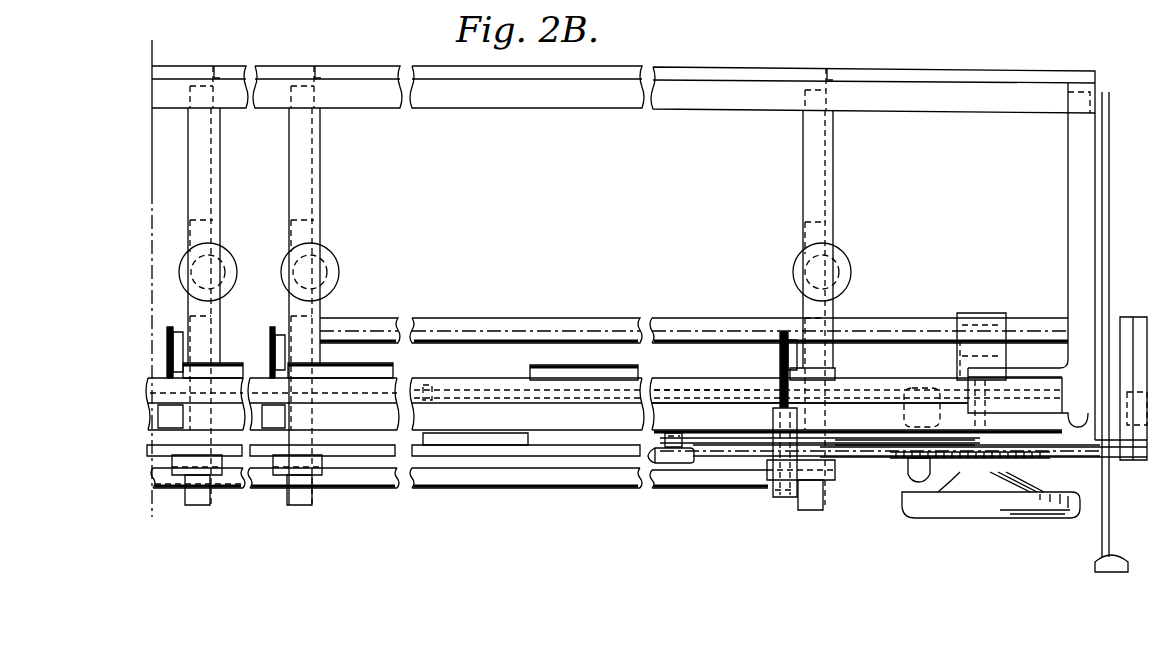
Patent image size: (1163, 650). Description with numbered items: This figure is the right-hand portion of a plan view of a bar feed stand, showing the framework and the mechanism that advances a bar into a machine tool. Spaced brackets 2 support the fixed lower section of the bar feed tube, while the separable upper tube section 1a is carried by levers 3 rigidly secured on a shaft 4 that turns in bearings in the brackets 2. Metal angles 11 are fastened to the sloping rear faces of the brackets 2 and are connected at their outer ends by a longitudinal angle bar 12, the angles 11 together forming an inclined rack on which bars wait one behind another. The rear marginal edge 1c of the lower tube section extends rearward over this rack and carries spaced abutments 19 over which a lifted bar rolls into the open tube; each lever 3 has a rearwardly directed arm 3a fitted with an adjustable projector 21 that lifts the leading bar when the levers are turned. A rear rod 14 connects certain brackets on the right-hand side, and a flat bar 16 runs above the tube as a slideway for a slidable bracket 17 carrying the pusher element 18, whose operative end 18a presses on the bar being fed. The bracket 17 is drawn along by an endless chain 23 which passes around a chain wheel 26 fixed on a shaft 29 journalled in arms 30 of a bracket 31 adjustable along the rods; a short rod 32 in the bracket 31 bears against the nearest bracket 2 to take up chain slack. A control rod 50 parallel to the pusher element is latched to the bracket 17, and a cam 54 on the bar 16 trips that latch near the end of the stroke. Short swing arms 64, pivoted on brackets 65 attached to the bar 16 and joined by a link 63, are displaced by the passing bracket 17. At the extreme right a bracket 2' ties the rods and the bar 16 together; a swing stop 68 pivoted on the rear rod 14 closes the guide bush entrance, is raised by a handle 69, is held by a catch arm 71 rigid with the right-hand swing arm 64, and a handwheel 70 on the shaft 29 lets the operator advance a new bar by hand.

The metal angle 11 is at (215, 165).
The angle bar 12 is at (485, 96).
The rear rod 14 is at (458, 325).
The abutment 19 is at (230, 364).
The projector 21 is at (180, 327).
The rearwardly directed arm 3a is at (173, 350).
The lever 3 is at (168, 425).
The bracket 2 is at (517, 502).
The shaft 4 is at (232, 478).
The bar of flat section 16 is at (565, 456).
The cam 54 is at (425, 430).
The rear marginal edge 1c is at (664, 370).
The upper tube section 1a is at (722, 415).
The control rod 50 is at (696, 388).
The swing arm 64 is at (676, 440).
The link 63 is at (744, 445).
The bracket 65 is at (685, 457).
The short rod 32 is at (847, 441).
The slidable bracket 17 is at (908, 423).
The endless chain 23 is at (858, 457).
The chain wheel 26 is at (1045, 458).
The pusher element 18 is at (935, 390).
The shaft 29 is at (980, 408).
The bracket 31 is at (975, 313).
The arm 30 is at (962, 380).
The swing stop 68 is at (1106, 325).
The catch arm 71 is at (1106, 460).
The bracket 2' is at (1133, 374).
The operative end 18a is at (1135, 400).
The handwheel 70 is at (998, 508).
The handle 69 is at (1100, 562).